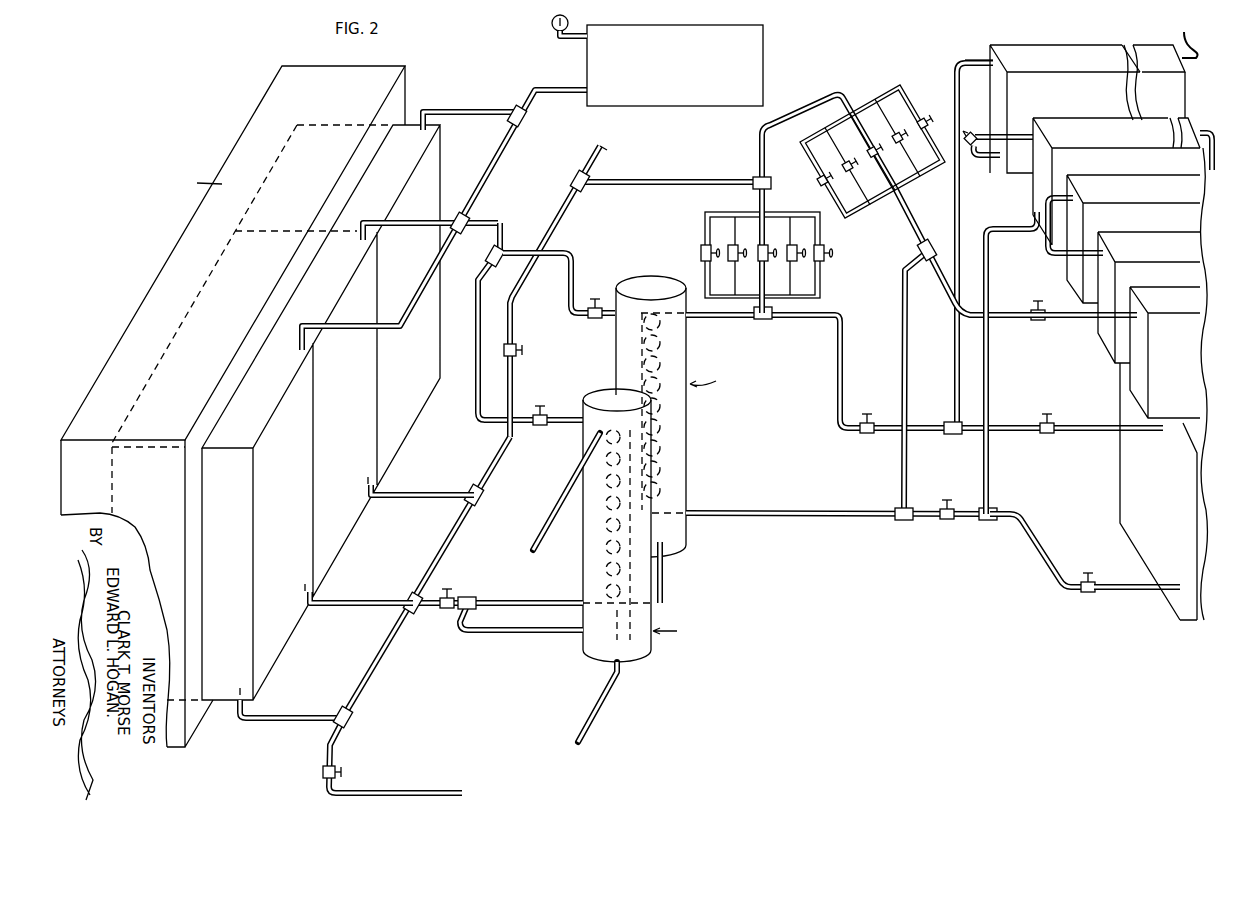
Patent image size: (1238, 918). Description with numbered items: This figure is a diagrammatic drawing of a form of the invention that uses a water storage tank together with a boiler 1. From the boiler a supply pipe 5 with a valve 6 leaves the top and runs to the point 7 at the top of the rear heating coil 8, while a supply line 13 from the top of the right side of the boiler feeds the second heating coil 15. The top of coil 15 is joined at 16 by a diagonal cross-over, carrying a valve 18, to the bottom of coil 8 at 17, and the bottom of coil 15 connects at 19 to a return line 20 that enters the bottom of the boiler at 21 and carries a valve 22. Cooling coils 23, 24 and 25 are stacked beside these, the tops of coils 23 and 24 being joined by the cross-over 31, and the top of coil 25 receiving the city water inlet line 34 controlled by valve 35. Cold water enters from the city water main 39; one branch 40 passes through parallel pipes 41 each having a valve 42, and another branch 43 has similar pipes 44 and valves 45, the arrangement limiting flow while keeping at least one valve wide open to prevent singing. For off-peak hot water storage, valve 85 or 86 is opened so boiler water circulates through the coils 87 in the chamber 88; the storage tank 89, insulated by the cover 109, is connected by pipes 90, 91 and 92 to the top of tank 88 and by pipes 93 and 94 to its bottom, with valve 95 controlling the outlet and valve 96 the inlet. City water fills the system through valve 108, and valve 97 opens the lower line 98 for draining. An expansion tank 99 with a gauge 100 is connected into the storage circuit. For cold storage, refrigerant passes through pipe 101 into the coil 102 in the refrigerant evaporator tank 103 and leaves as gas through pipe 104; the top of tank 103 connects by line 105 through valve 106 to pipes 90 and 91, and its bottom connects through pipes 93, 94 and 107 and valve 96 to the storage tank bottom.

The boiler 1 is at (1185, 612).
The supply pipe 5 is at (961, 213).
The valve 6 is at (1048, 414).
The point 7 is at (992, 70).
The rear heating coil 8 is at (1000, 45).
The supply line 13 is at (1203, 130).
The second heating coil 15 is at (1058, 118).
The connection point 16 is at (1033, 143).
The connection point 17 is at (992, 158).
The valve 18 is at (971, 132).
The connection point 19 is at (1034, 218).
The return line 20 is at (990, 375).
The connection point 21 is at (1173, 585).
The valve 22 is at (1088, 573).
The cooling coil 23 is at (1168, 200).
The cooling coil 24 is at (1177, 256).
The cooling coil 25 is at (1174, 312).
The cross-over 31 is at (1063, 231).
The city water inlet line 34 is at (1062, 330).
The valve 35 is at (1034, 323).
The city water main 39 is at (597, 148).
The branch 40 is at (800, 112).
The parallel pipes 41 is at (896, 96).
The valves 42 is at (925, 117).
The branch 43 is at (758, 202).
The pipes 44 is at (822, 233).
The valves 45 is at (818, 266).
The valve 85 is at (868, 414).
The valve 86 is at (946, 502).
The coils 87 is at (666, 462).
The chamber 88 is at (689, 421).
The storage tank 89 is at (430, 167).
The pipe 90 is at (457, 110).
The pipe 91 is at (500, 220).
The pipe 92 is at (566, 279).
The pipe 93 is at (400, 492).
The pipe 94 is at (430, 608).
The valve 95 is at (596, 322).
The valve 96 is at (450, 586).
The valve 97 is at (348, 768).
The line 98 is at (438, 791).
The expansion tank 99 is at (766, 31).
The gauge 100 is at (550, 25).
The pipe 101 is at (590, 718).
The coil 102 is at (607, 563).
The refrigerant evaporator tank 103 is at (642, 656).
The pipe 104 is at (545, 532).
The line 105 is at (566, 412).
The valve 106 is at (539, 405).
The pipe 107 is at (500, 634).
The valve 108 is at (526, 350).
The cover 109 is at (190, 248).